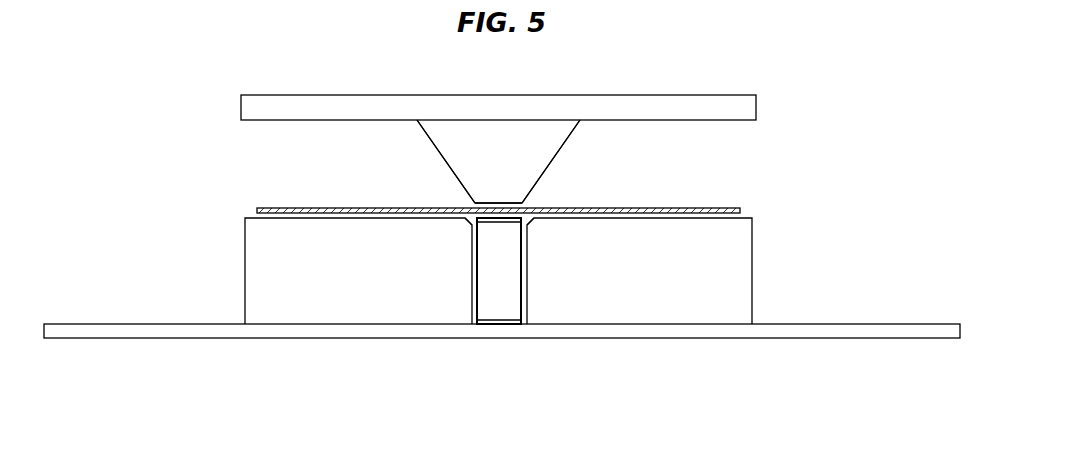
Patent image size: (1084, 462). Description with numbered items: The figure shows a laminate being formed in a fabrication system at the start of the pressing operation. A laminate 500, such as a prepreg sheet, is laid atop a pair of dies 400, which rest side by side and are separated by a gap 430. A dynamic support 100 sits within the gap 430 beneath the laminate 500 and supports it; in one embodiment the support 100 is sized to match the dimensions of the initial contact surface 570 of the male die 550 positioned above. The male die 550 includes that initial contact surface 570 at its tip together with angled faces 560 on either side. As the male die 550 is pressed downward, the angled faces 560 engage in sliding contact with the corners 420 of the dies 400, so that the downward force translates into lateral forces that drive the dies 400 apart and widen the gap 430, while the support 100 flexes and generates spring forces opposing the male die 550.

The support 100 is at (503, 283).
The dies 400 is at (245, 268).
The corners 420 is at (465, 222).
The gap 430 is at (528, 345).
The laminate 500 is at (690, 208).
The male die 550 is at (768, 103).
The angled faces 560 is at (441, 153).
The initial contact surface 570 is at (480, 203).